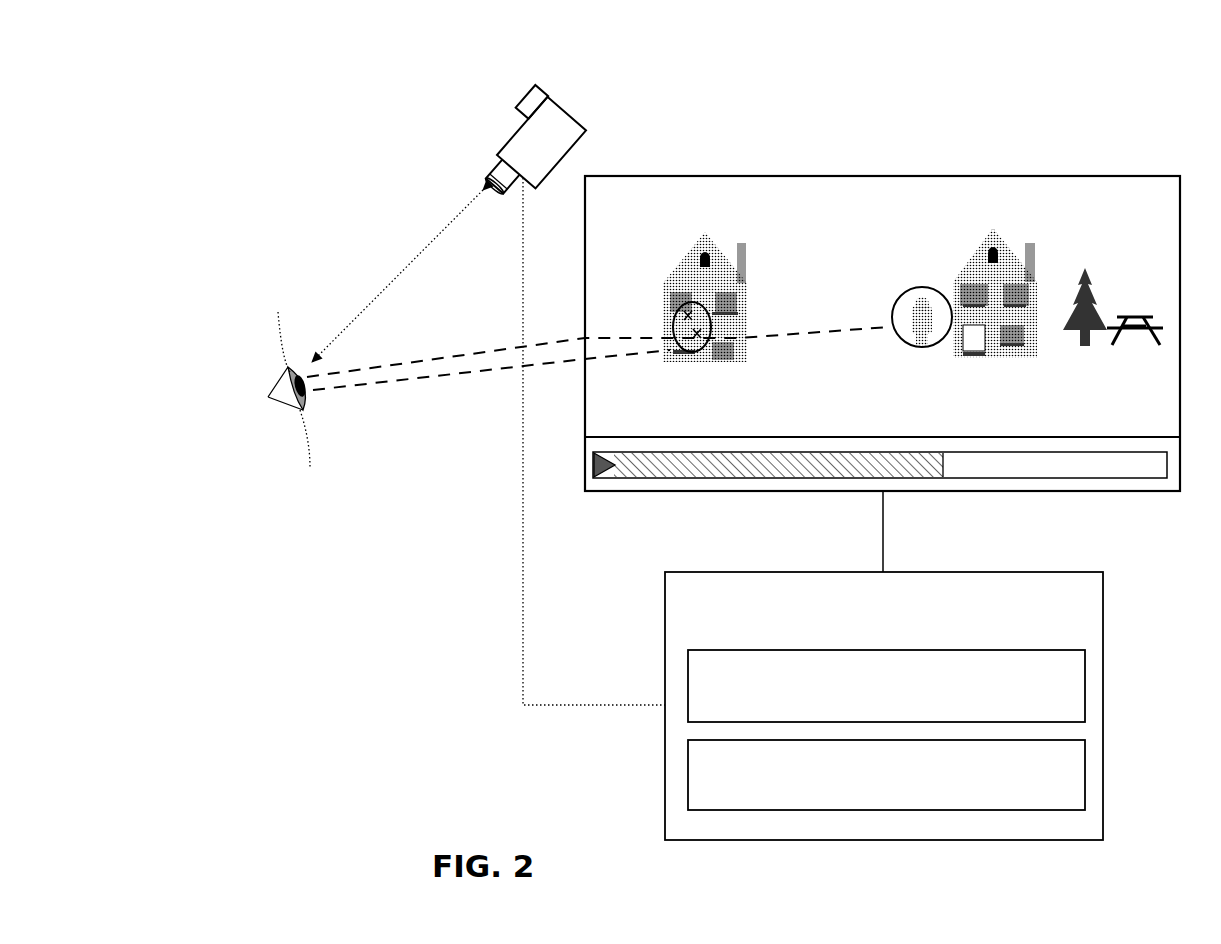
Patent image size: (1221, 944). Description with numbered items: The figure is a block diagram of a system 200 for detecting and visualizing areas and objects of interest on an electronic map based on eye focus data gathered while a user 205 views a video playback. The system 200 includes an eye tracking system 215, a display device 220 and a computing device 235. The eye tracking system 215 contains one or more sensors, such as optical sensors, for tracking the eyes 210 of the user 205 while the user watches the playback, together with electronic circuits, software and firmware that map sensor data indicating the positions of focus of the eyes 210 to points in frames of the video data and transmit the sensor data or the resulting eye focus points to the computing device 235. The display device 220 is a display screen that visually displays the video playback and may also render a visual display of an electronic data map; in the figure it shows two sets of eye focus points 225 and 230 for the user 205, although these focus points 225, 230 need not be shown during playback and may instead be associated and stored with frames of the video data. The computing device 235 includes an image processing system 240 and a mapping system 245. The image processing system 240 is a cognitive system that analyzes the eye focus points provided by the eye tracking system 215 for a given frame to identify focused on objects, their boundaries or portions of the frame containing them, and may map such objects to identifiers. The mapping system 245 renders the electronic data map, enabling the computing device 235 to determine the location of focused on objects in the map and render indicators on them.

The system 200 is at (1108, 58).
The user 205 is at (302, 398).
The eyes 210 is at (303, 408).
The eye tracking system 215 is at (583, 137).
The display device 220 is at (1032, 175).
The eye focus points 225 is at (672, 319).
The eye focus points 230 is at (922, 287).
The computing device 235 is at (884, 706).
The image processing system 240 is at (886, 686).
The mapping system 245 is at (886, 775).